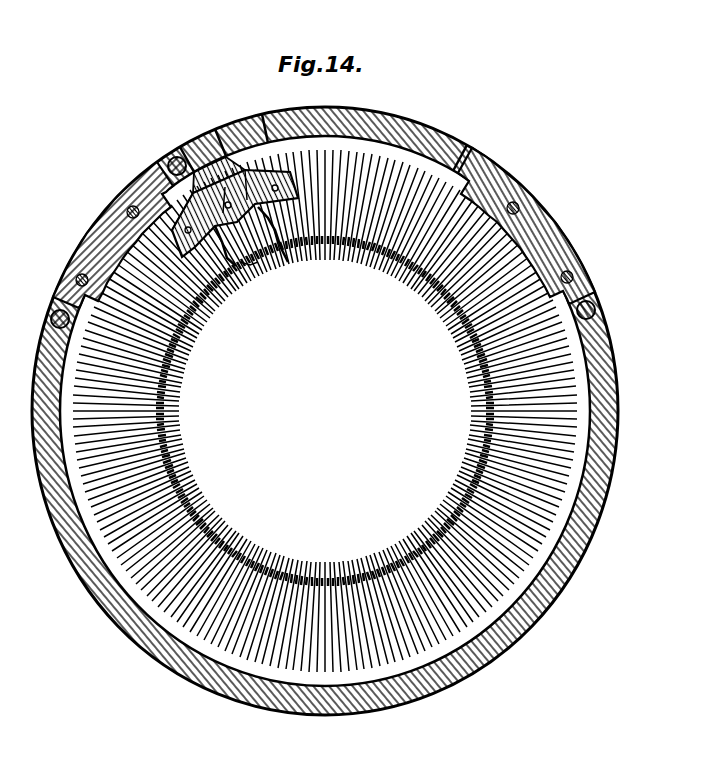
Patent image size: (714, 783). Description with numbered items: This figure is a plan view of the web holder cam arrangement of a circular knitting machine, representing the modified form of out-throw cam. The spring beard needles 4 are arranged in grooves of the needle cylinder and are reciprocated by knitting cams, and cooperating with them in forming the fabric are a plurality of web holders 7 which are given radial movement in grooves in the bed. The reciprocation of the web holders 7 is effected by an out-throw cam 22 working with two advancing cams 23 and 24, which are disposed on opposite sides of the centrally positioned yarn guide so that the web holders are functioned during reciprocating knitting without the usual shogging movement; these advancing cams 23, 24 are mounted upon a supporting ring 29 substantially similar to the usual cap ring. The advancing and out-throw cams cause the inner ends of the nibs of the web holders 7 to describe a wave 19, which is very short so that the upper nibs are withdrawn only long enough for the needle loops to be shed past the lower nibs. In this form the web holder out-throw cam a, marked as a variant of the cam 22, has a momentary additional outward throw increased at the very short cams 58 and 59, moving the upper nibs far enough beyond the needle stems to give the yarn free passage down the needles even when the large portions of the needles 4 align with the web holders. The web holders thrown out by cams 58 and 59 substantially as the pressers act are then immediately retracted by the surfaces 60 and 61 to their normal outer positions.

The spring beard needles 4 is at (162, 388).
The web holders 7 is at (493, 365).
The wave 19 is at (260, 263).
The out-throw cam 22 is at (216, 133).
The web holder out-throw cam a is at (246, 117).
The advancing cam 23 is at (111, 221).
The advancing cam 24 is at (540, 220).
The supporting ring 29 is at (605, 400).
The cam 58 is at (171, 164).
The cam 59 is at (248, 168).
The surface 60 is at (232, 262).
The surface 61 is at (289, 262).